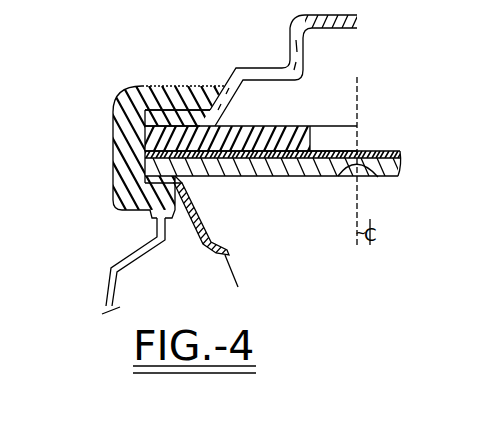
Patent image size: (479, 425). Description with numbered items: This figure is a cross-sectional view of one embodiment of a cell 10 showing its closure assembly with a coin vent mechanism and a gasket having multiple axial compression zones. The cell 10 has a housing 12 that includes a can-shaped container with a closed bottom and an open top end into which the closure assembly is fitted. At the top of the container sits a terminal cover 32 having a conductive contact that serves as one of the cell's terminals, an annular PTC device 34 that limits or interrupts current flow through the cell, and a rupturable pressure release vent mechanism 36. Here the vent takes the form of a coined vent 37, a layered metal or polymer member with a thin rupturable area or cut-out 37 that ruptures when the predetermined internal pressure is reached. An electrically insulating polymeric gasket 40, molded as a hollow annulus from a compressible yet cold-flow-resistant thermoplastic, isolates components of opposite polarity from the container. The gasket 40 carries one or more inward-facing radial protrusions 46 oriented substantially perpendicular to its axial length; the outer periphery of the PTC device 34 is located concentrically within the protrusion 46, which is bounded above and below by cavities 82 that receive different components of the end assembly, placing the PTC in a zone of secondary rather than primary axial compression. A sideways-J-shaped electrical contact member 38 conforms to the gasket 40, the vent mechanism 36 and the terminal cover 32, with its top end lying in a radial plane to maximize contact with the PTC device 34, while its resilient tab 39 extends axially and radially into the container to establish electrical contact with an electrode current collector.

The cell 10 is at (126, 76).
The housing 12 is at (111, 127).
The terminal cover 32 is at (290, 52).
The PTC device 34 is at (263, 118).
The pressure release vent mechanism 36 is at (225, 182).
The coined vent 37 is at (343, 175).
The electrical contact member 38 is at (206, 221).
The tab 39 is at (245, 278).
The gasket 40 is at (110, 166).
The radial protrusion 46 is at (163, 112).
The cavity 82 is at (197, 108).